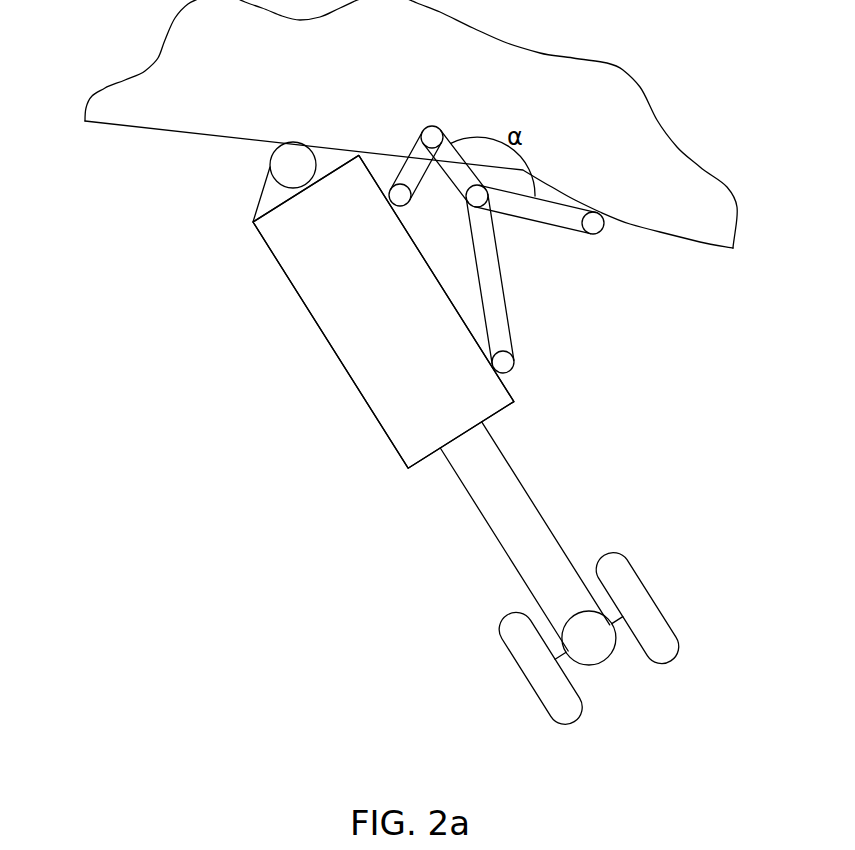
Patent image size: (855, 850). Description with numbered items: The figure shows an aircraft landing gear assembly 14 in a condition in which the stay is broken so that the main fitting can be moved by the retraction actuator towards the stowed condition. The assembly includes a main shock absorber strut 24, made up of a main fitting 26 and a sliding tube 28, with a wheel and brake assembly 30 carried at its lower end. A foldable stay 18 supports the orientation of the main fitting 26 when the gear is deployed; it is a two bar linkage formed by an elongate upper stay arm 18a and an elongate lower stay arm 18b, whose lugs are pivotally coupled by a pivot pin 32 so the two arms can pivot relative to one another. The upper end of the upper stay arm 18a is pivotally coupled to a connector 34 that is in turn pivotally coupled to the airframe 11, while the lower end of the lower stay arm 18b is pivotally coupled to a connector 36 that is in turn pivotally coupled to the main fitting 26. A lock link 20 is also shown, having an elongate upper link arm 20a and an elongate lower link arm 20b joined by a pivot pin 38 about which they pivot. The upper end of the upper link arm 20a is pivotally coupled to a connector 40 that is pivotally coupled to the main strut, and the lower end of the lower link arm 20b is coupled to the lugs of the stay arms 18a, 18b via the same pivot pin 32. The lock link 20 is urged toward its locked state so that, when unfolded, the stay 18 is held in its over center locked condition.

The airframe 11 is at (150, 128).
The aircraft landing gear assembly 14 is at (570, 360).
The foldable stay 18 is at (562, 273).
The upper stay arm 18a is at (566, 213).
The lower stay arm 18b is at (507, 311).
The lock link 20 is at (336, 196).
The upper link arm 20a is at (418, 143).
The lower link arm 20b is at (446, 150).
The main shock absorber strut 24 is at (348, 373).
The main fitting 26 is at (379, 423).
The sliding tube 28 is at (480, 514).
The wheel and brake assembly 30 is at (500, 658).
The pivot pin 32 is at (477, 207).
The connector 34 is at (602, 231).
The connector 36 is at (513, 369).
The pivot pin 38 is at (428, 126).
The connector 40 is at (389, 197).